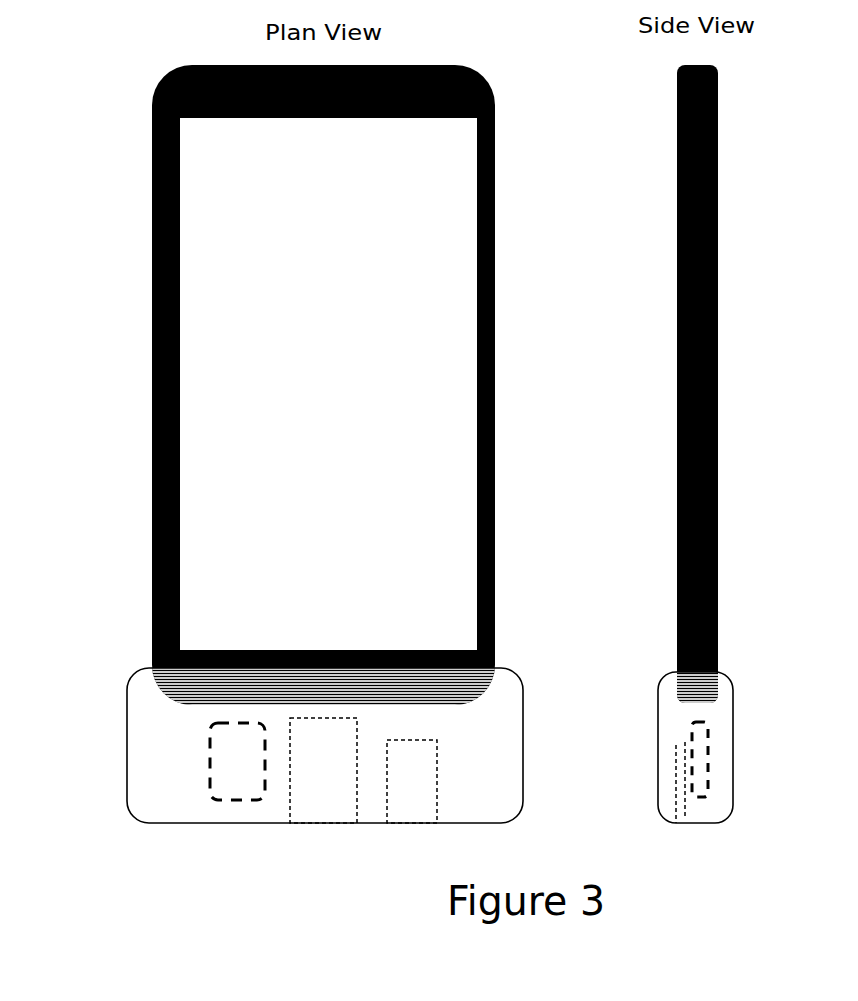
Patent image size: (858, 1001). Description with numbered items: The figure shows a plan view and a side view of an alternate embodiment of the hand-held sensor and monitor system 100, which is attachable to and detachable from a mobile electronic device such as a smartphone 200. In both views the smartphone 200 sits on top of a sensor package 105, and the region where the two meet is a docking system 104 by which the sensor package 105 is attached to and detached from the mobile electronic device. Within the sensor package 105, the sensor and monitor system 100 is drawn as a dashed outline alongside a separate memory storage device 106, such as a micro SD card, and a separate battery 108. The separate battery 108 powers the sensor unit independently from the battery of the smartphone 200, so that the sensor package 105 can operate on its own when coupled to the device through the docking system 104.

The smartphone 200 is at (677, 100).
The docking system 104 is at (667, 673).
The sensor package 105 is at (127, 780).
The hand-held sensor and monitor system 100 is at (217, 735).
The separate battery 108 is at (318, 812).
The memory storage device 106 is at (677, 800).